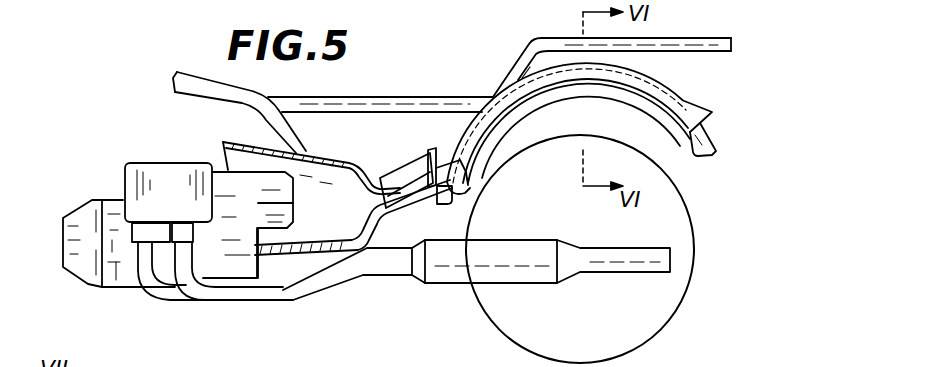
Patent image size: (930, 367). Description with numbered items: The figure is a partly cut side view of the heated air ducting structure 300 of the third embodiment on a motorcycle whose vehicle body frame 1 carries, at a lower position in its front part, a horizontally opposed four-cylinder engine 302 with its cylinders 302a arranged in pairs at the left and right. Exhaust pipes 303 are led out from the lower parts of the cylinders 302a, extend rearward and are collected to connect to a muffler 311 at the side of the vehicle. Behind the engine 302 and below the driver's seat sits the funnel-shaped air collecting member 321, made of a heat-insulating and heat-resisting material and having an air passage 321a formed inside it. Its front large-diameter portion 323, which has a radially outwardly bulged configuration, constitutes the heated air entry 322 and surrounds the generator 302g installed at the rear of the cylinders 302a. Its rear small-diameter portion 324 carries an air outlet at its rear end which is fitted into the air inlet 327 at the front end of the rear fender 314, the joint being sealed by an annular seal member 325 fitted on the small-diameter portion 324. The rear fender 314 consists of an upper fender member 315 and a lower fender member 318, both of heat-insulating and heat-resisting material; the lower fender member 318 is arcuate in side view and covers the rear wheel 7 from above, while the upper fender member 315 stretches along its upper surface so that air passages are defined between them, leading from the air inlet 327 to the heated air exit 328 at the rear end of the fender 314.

The vehicle body frame 1 is at (401, 89).
The rear wheel 7 is at (667, 323).
The heated air ducting structure 300 is at (407, 235).
The engine 302 is at (119, 279).
The cylinders 302a is at (143, 165).
The generator 302g is at (260, 197).
The exhaust pipes 303 is at (170, 294).
The muffler 311 is at (533, 278).
The rear fender 314 is at (604, 112).
The upper fender member 315 is at (533, 65).
The lower fender member 318 is at (568, 108).
The air collecting member 321 is at (351, 155).
The air passage 321a is at (327, 232).
The heated air entry 322 is at (226, 152).
The front large-diameter portion 323 is at (247, 142).
The rear small-diameter portion 324 is at (412, 177).
The annular seal member 325 is at (430, 150).
The air inlet 327 is at (447, 193).
The heated air exit 328 is at (712, 120).